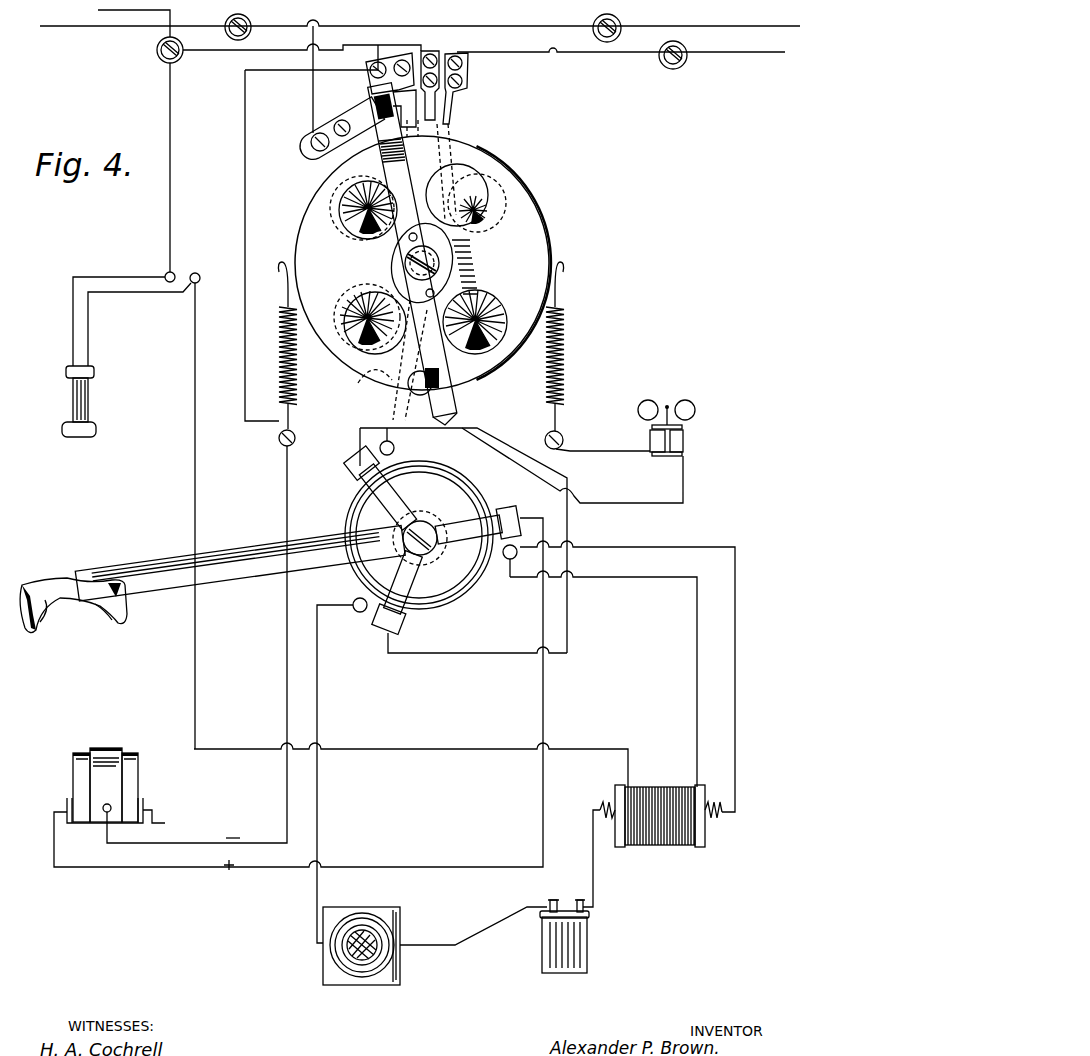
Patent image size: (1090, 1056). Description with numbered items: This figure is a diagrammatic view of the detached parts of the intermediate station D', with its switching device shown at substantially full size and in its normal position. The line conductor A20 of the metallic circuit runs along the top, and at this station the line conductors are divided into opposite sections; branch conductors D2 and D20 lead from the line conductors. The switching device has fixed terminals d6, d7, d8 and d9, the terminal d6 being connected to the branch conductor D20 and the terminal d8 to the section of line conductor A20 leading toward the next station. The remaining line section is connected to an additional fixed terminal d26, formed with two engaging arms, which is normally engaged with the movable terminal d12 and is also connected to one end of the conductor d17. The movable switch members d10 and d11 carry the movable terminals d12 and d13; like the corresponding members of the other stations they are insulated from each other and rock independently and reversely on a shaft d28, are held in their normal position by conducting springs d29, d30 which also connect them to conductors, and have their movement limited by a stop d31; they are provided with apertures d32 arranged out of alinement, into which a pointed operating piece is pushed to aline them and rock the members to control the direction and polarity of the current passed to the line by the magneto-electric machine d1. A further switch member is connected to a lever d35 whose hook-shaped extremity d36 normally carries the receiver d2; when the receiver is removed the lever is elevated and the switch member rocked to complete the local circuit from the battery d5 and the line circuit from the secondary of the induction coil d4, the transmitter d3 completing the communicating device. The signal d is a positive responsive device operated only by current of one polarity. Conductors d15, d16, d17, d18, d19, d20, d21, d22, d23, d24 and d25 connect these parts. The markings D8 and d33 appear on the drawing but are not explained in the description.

The line wire A20 is at (62, 26).
The branch conductor D20 is at (183, 45).
The branch conductor D2 is at (258, 27).
The conductor d15 is at (561, 54).
The conductor d16 is at (171, 177).
The receiver d2 is at (73, 402).
The conductor d17 is at (245, 376).
The fixed terminal d6 is at (434, 58).
The fixed terminal d7 is at (466, 80).
The movable terminal d13 is at (448, 136).
The additional fixed terminal d26 is at (372, 77).
The contact arm D8 is at (320, 128).
The fixed terminal d8 is at (323, 126).
The movable switch member d10 is at (312, 262).
The lever d28 is at (452, 250).
The contact recess d32 is at (369, 239).
The movable switch member d11 is at (478, 178).
The contact brush d33 is at (362, 317).
The roller d31 is at (404, 396).
The movable terminal d12 is at (460, 390).
The fixed terminal d9 is at (468, 412).
The spring d29 is at (298, 401).
The spring d30 is at (567, 381).
The conductor d18 is at (608, 450).
The signal d is at (683, 447).
The conductor d20 is at (567, 527).
The conductor d19 is at (613, 506).
The station D' is at (432, 569).
The switch lever d35 is at (237, 553).
The lever handle d36 is at (68, 582).
The conductor d24 is at (735, 684).
The conductor d23 is at (697, 690).
The conductor d22 is at (371, 867).
The conductor d25 is at (316, 802).
The conductor d21 is at (287, 803).
The magneto-electric machine d1 is at (108, 750).
The transmitter d3 is at (393, 923).
The battery d5 is at (588, 947).
The induction-coil d4 is at (653, 794).